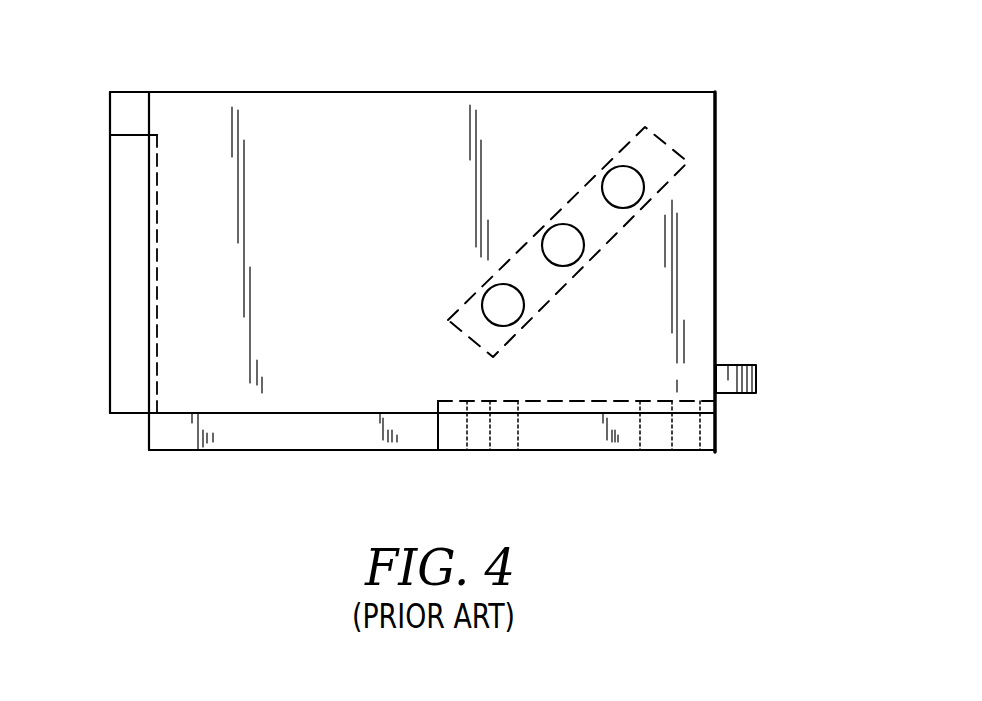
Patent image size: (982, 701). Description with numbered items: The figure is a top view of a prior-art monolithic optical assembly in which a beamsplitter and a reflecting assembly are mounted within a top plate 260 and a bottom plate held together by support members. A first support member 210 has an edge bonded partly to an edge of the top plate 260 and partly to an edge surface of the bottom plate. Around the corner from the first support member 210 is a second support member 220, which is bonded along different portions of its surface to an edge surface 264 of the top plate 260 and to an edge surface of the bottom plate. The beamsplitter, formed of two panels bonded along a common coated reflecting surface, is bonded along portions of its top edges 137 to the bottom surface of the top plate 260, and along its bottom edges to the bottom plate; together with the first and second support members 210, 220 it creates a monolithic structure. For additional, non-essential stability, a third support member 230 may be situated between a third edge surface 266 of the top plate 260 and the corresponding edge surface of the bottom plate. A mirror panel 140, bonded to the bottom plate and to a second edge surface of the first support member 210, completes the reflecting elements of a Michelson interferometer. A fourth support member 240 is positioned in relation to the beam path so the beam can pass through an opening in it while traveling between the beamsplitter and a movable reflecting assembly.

The first support member 210 is at (110, 92).
The mirror panel 140 is at (110, 300).
The second support member 220 is at (218, 450).
The top plate 260 is at (357, 121).
The top edges 137 is at (560, 235).
The third edge surface 266 is at (716, 231).
The third support member 230 is at (756, 364).
The fourth support member 240 is at (716, 452).
The edge surface 264 is at (530, 413).